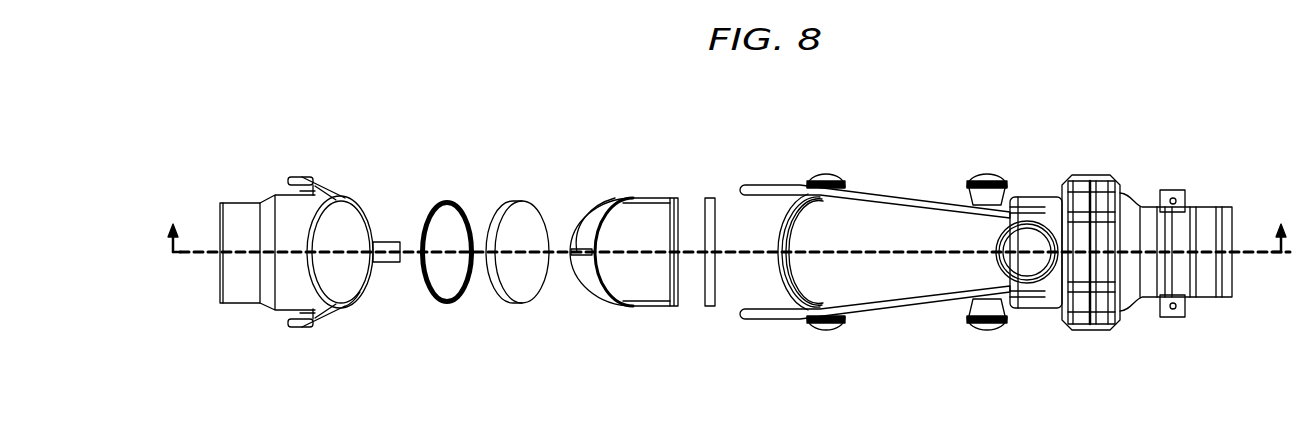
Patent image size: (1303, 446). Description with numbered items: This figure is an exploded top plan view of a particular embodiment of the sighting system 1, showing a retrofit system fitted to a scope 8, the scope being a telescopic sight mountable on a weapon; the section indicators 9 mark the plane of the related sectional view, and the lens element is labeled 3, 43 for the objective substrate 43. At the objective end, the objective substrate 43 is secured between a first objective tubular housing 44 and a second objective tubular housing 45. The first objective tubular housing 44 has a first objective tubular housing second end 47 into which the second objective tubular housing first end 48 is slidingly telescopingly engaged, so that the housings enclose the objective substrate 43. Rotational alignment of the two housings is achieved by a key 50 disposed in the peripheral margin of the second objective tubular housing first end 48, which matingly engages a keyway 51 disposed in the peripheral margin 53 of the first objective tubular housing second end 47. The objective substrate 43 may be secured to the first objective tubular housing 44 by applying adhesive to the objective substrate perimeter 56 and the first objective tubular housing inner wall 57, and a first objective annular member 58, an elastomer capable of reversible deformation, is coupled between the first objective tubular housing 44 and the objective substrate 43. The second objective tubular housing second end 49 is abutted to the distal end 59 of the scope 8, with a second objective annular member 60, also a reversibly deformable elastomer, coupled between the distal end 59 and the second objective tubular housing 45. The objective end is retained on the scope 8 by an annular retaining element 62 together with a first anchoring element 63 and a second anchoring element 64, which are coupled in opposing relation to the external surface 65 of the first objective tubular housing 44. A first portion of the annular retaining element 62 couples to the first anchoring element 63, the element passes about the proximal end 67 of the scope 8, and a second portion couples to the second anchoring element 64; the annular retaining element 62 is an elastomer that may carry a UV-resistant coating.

The sighting system 1 is at (992, 107).
The lens 3 is at (519, 253).
The objective substrate 43 is at (519, 253).
The scope 8 is at (1148, 236).
The section line 9- 9 is at (728, 221).
The first objective tubular housing 44 is at (287, 200).
The second objective tubular housing 45 is at (613, 208).
The first objective tubular housing second end 47 is at (362, 256).
The second objective tubular housing first end 48 is at (630, 244).
The second objective tubular housing second end 49 is at (677, 217).
The key 50 is at (574, 250).
The keyway 51 is at (308, 252).
The peripheral margin 53 is at (365, 290).
The objective substrate perimeter 56 is at (500, 283).
The first objective tubular housing inner wall 57 is at (335, 287).
The first objective annular member 58 is at (443, 202).
The distal end 59 is at (788, 212).
The second objective annular member 60 is at (710, 302).
The annular retaining element 62 is at (765, 313).
The first anchoring element 63 is at (293, 328).
The second anchoring element 64 is at (303, 177).
The external surface 65 is at (240, 203).
The proximal end 67 is at (1235, 278).